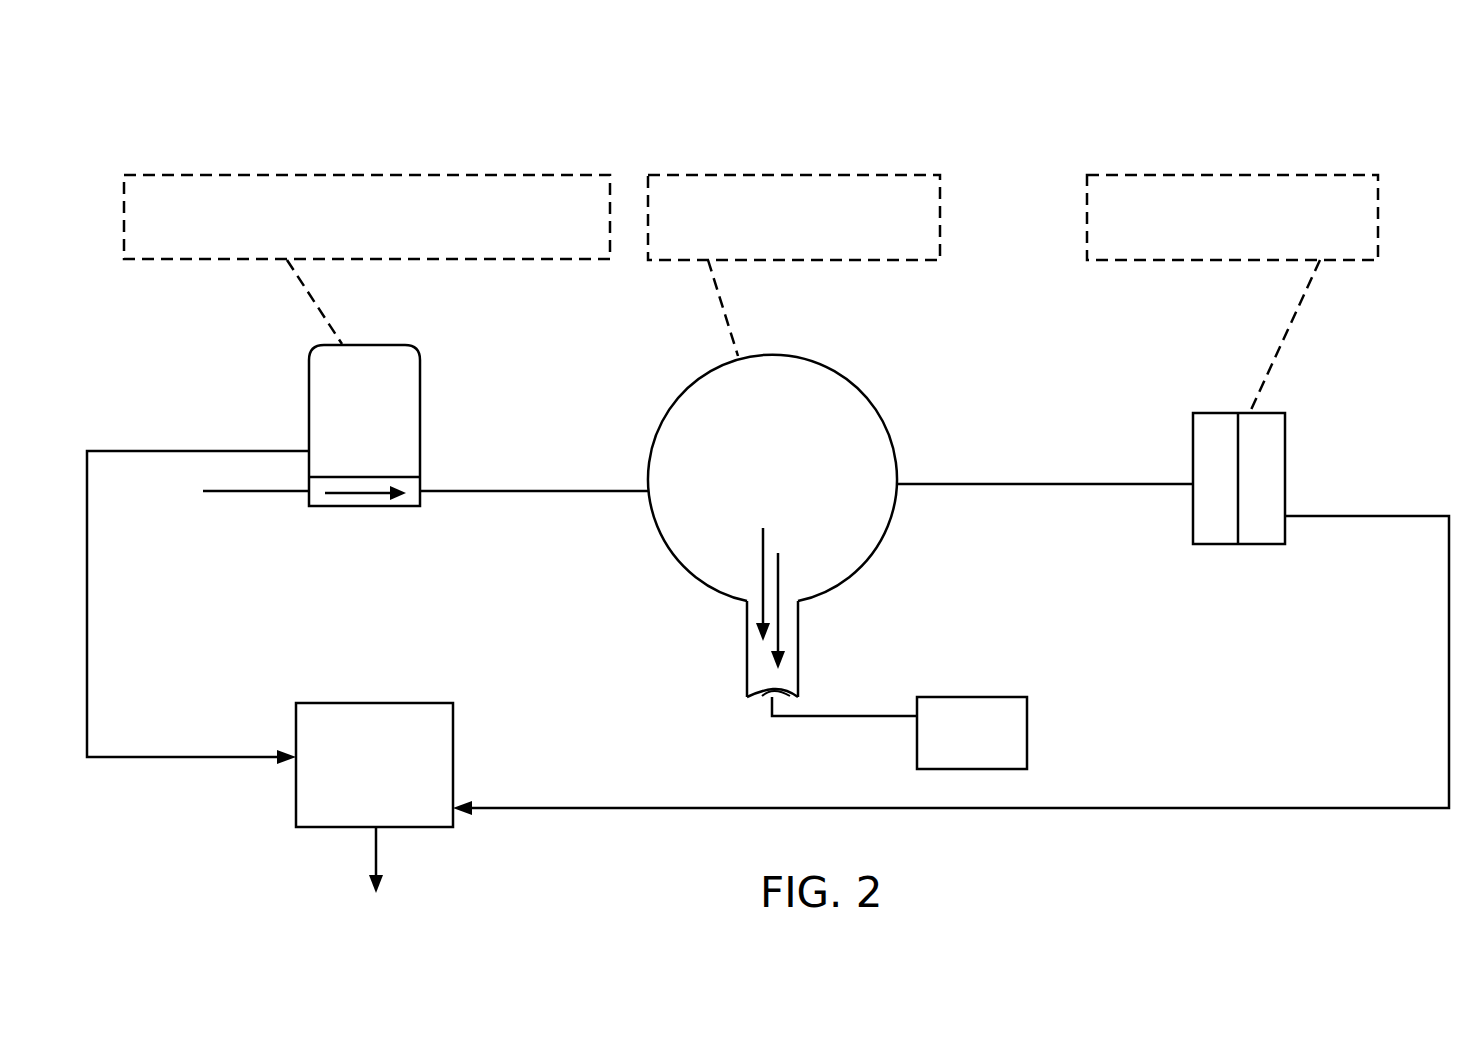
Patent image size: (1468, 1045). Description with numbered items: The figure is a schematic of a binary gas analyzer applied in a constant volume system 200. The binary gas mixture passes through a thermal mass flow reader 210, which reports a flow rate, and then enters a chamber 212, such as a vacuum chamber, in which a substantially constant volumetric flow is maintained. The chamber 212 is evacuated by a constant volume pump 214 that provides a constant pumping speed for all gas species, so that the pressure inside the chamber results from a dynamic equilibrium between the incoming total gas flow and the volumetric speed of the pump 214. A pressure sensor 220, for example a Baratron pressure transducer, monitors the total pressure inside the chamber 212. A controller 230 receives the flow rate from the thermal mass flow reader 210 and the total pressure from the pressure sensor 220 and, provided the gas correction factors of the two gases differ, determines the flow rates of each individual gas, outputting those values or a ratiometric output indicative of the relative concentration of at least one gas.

The system 200 is at (482, 90).
The thermal mass flow reader 210 is at (309, 396).
The chamber 212 is at (862, 390).
The constant volume pump 214 is at (949, 748).
The pressure sensor 220 is at (1280, 450).
The controller 230 is at (351, 778).